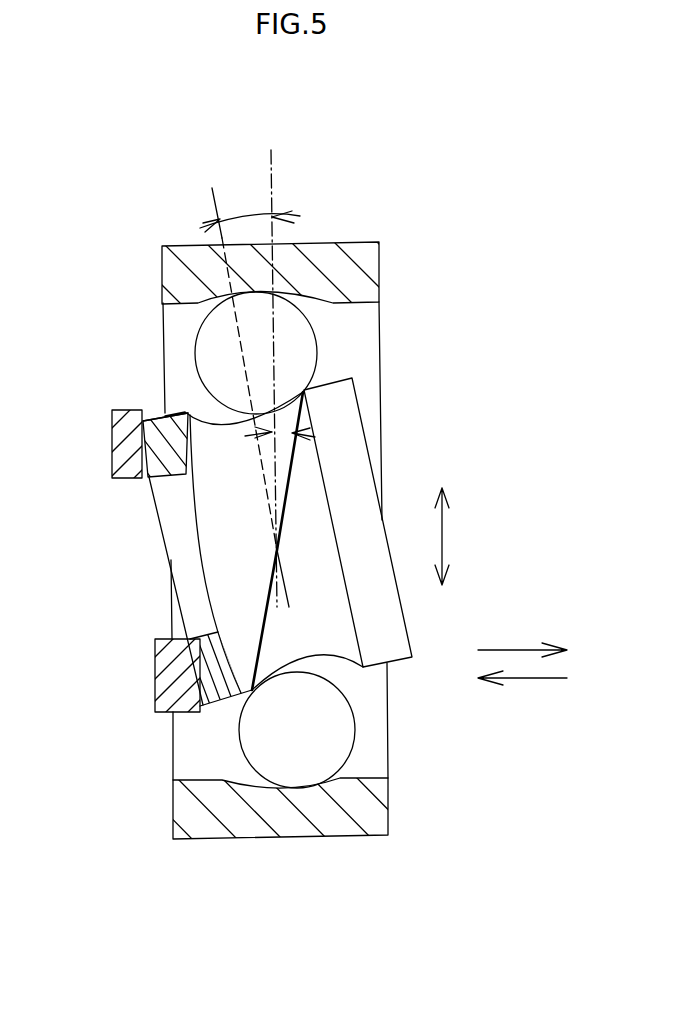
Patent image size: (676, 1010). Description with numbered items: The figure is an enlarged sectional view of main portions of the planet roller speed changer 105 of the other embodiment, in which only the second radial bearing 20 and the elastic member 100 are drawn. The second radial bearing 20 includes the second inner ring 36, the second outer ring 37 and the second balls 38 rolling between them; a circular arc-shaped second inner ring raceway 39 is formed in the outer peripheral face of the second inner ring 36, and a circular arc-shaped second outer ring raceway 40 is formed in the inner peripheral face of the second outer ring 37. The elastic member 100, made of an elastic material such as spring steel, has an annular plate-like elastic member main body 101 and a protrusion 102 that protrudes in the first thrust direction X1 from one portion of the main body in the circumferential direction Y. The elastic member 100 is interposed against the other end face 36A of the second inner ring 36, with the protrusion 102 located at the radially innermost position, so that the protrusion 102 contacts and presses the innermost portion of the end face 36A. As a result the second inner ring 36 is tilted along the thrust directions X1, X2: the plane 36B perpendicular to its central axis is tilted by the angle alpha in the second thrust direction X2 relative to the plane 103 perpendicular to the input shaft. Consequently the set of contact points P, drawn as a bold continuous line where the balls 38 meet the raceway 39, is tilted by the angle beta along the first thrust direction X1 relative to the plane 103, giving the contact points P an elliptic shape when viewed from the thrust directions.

The second radial bearing 20 is at (395, 242).
The second inner ring 36 is at (238, 476).
The other end face of the second inner ring 36A is at (183, 653).
The plane perpendicular to the central axis of the second inner ring 36B is at (212, 197).
The second outer ring 37 is at (383, 813).
The second balls 38 is at (313, 730).
The second inner ring raceway 39 is at (215, 416).
The second outer ring raceway 40 is at (292, 293).
The elastic member 100 is at (139, 708).
The elastic member main body 101 is at (128, 438).
The protrusion 102 is at (160, 680).
The plane perpendicular to the input shaft 103 is at (268, 160).
The planet roller speed changer 105 is at (344, 213).
The set of contact points P is at (263, 615).
The circumferential direction Y is at (443, 538).
The first thrust direction X1 is at (517, 648).
The second thrust direction X2 is at (532, 681).
The tilt angle of the inner ring plane alpha is at (242, 214).
The tilt angle of the set of contact points beta is at (290, 415).